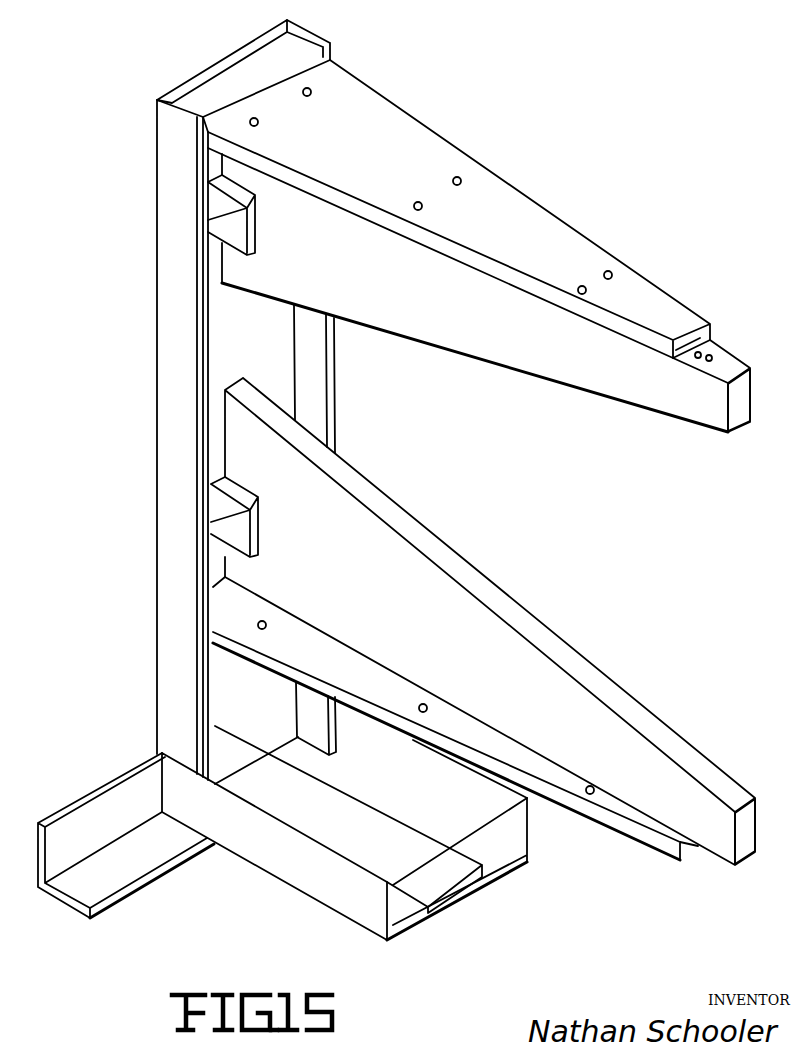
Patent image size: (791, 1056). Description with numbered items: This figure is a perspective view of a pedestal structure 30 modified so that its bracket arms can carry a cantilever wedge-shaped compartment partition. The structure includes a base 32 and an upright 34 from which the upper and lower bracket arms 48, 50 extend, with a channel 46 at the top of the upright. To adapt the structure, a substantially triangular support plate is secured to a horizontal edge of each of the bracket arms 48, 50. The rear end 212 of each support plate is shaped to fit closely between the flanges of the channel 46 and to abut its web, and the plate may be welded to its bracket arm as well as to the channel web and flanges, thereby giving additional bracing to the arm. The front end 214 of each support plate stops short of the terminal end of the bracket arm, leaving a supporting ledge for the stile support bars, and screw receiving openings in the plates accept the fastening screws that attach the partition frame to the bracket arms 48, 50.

The pedestal structure 30 is at (527, 501).
The base 32 is at (300, 893).
The upright post 34 is at (161, 386).
The channel 46 is at (202, 72).
The bracket arm 48 is at (483, 345).
The bracket arm 50 is at (522, 652).
The rear end 212 is at (257, 70).
The front end 214 is at (703, 337).